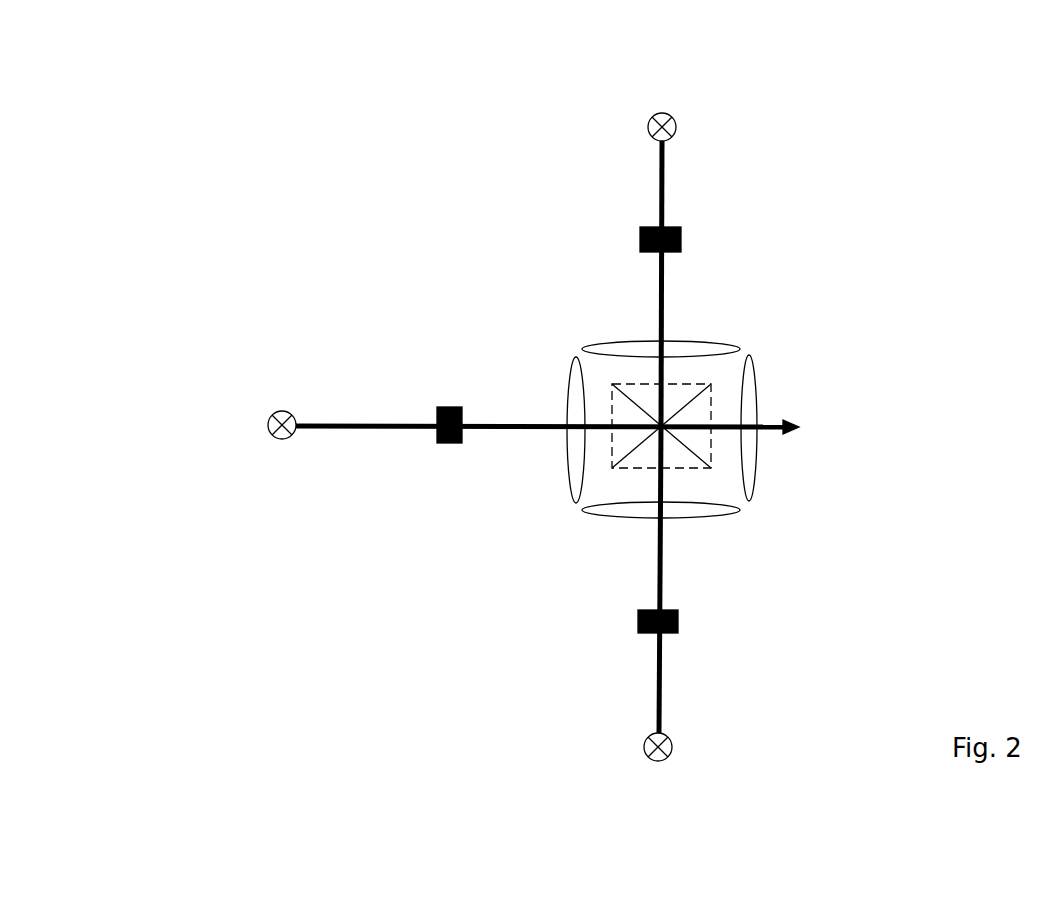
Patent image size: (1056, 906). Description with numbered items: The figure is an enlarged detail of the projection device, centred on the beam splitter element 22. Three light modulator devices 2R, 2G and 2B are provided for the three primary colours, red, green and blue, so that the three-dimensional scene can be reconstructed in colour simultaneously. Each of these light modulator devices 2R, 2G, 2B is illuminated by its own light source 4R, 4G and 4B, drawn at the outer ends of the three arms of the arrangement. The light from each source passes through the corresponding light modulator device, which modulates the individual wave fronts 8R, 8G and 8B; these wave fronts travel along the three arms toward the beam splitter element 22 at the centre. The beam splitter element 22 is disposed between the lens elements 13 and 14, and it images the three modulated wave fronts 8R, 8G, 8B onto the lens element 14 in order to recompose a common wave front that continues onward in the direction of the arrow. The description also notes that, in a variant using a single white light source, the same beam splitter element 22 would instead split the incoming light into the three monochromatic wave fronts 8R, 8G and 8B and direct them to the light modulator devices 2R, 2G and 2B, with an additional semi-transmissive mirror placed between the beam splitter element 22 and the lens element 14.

The light modulator device 2R is at (642, 227).
The light modulator device 2G is at (438, 407).
The light modulator device 2B is at (678, 632).
The light source 4R is at (653, 115).
The light source 4G is at (270, 432).
The light source 4B is at (660, 760).
The wave front 8R is at (663, 285).
The wave front 8G is at (485, 423).
The wave front 8B is at (657, 570).
The lens element 13 is at (692, 340).
The lens element 14 is at (753, 475).
The beam splitter element 22 is at (678, 394).